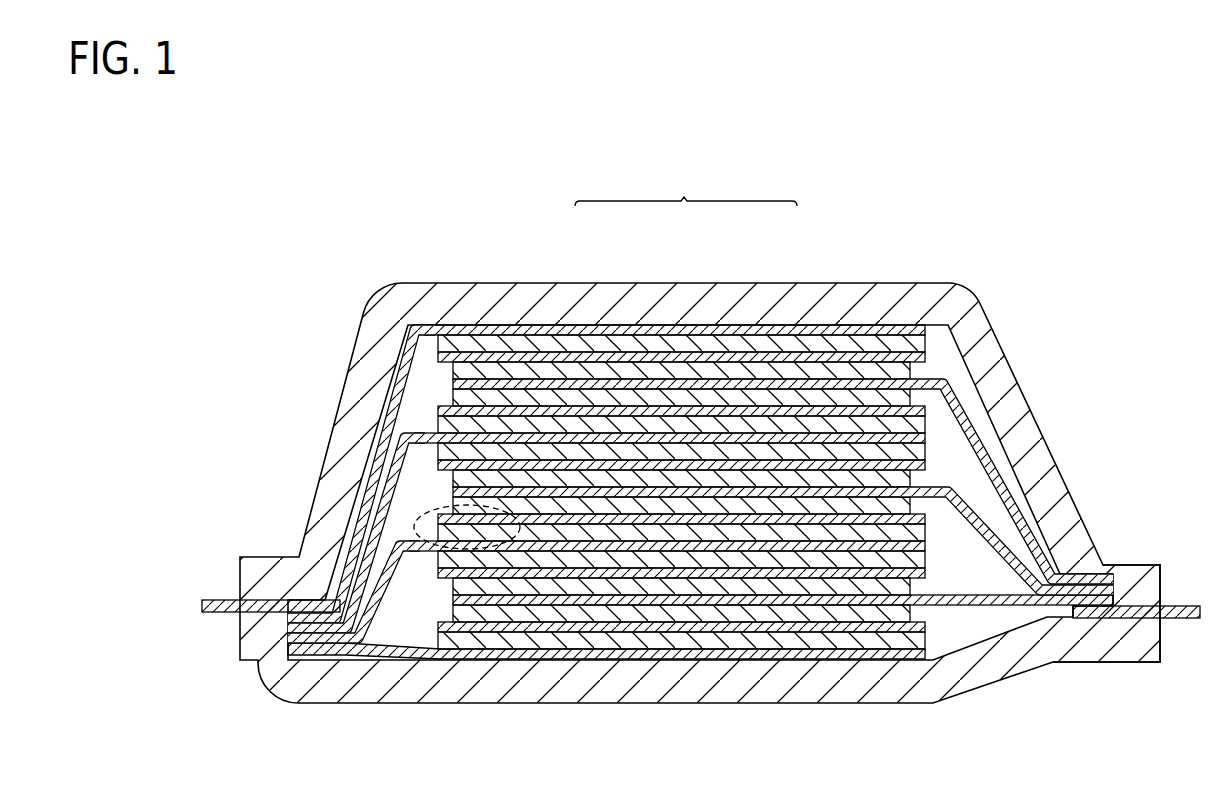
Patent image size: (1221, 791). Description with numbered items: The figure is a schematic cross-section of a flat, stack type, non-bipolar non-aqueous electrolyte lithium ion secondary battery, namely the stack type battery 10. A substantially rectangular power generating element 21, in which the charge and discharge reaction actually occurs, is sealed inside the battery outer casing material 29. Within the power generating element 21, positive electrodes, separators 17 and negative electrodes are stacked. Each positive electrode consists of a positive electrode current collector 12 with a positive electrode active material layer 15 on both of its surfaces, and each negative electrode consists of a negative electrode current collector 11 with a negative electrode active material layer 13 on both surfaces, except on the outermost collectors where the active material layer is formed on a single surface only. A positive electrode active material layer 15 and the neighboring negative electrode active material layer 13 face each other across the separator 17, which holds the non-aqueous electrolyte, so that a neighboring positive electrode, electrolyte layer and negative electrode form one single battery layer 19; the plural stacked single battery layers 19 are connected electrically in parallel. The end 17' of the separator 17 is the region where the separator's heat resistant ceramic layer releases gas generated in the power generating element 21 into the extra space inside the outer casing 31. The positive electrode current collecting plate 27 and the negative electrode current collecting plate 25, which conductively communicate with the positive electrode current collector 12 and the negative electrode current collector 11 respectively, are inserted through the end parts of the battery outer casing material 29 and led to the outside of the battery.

The stack type battery 10 is at (260, 159).
The negative electrode current collector 11 is at (778, 330).
The positive electrode current collector 12 is at (594, 384).
The negative electrode active material layer 13 is at (733, 344).
The positive electrode active material layer 15 is at (640, 371).
The separator 17 is at (681, 492).
The end of the separator 17' is at (391, 496).
The single battery layer 19 is at (686, 182).
The power generating element 21 is at (687, 492).
The negative electrode current collecting plate 25 is at (218, 599).
The positive electrode current collecting plate 27 is at (1186, 605).
The battery outer casing material 29 is at (1143, 563).
The outer casing 31 is at (942, 438).